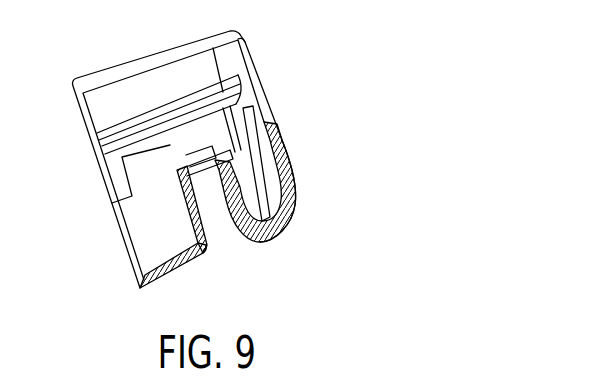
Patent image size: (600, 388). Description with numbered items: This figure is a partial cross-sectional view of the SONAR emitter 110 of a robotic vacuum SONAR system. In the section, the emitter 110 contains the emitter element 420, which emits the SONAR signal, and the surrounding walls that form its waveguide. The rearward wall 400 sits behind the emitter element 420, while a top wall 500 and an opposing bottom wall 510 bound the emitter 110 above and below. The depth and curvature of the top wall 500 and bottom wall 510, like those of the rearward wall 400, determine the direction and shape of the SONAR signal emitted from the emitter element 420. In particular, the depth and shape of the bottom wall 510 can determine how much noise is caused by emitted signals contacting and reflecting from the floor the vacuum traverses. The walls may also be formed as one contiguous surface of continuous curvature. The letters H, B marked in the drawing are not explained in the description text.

The SONAR emitter 110 is at (216, 233).
The rearward wall 400 is at (198, 196).
The emitter element 420 is at (185, 148).
The top wall 500 is at (253, 236).
The bottom wall 510 is at (158, 216).
The hook and barb H, B is at (296, 190).